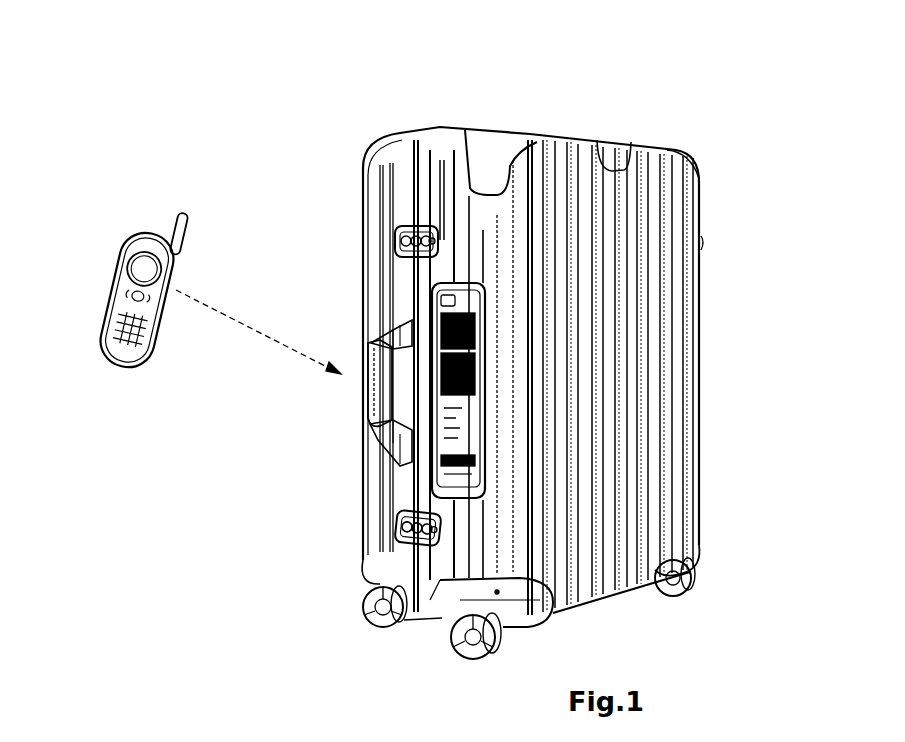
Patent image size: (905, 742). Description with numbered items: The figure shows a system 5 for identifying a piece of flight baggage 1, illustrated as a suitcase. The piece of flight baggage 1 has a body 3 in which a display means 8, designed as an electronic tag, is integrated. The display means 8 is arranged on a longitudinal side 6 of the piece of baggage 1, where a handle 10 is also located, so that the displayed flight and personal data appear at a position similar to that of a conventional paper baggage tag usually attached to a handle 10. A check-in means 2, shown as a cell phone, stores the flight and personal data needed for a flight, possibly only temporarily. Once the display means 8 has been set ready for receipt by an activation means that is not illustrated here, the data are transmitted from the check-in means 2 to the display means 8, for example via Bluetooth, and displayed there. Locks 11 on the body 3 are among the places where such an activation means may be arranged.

The piece of flight baggage 1 is at (536, 367).
The check-in means 2 is at (142, 266).
The body of the piece of flight baggage 3 is at (688, 345).
The system for identifying a piece of flight baggage 5 is at (332, 158).
The longitudinal side 6 is at (447, 175).
The display means 8 is at (445, 452).
The handle 10 is at (378, 400).
The combination lock 11 is at (396, 237).